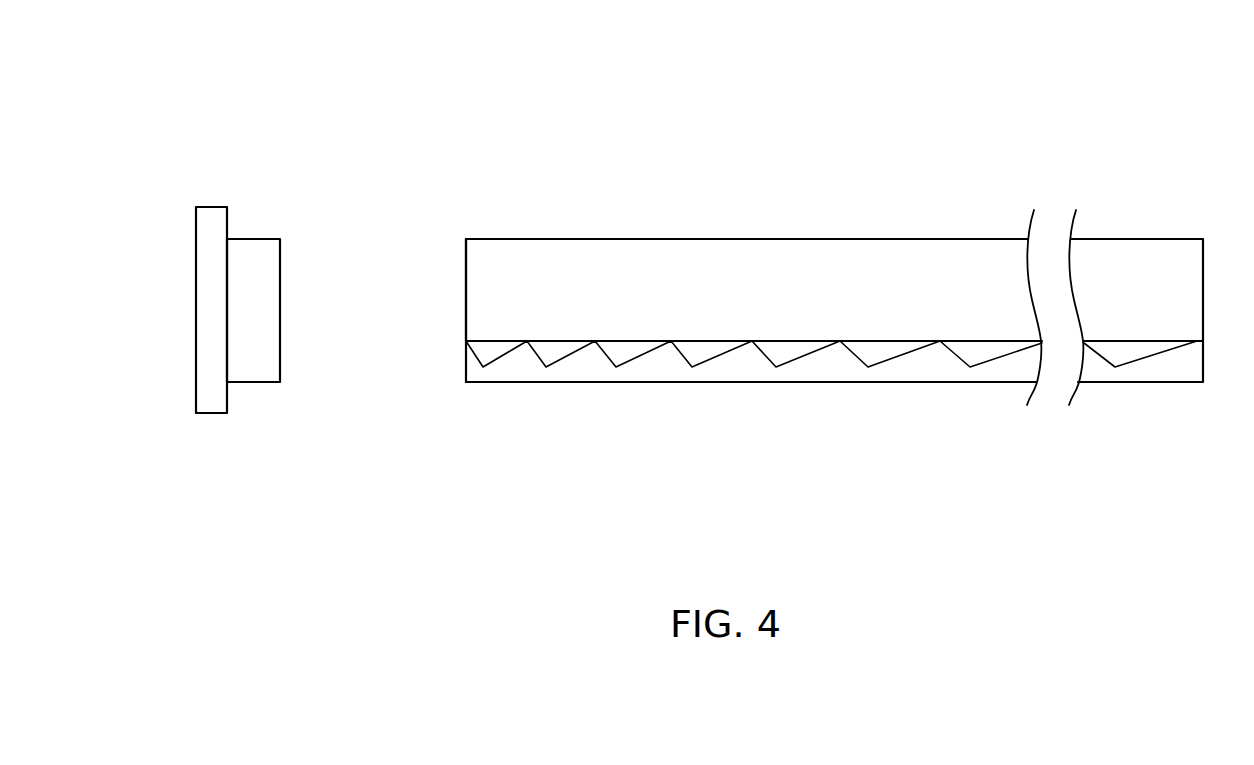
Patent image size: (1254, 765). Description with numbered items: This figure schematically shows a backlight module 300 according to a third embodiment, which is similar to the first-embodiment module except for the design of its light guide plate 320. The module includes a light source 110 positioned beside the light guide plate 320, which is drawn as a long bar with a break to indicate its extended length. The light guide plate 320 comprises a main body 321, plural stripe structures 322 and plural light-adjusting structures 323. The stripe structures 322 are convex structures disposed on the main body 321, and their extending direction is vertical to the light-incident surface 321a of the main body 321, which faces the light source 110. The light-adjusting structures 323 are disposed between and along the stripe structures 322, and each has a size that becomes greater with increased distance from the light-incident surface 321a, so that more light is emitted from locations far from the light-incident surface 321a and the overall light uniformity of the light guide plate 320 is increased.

The backlight module 300 is at (150, 82).
The light source 110 is at (208, 312).
The light guide plate 320 is at (798, 316).
The main body 321 is at (743, 257).
The light-incident surface 321a is at (465, 310).
The stripe structures 322 is at (828, 367).
The light-adjusting structures 323 is at (575, 392).